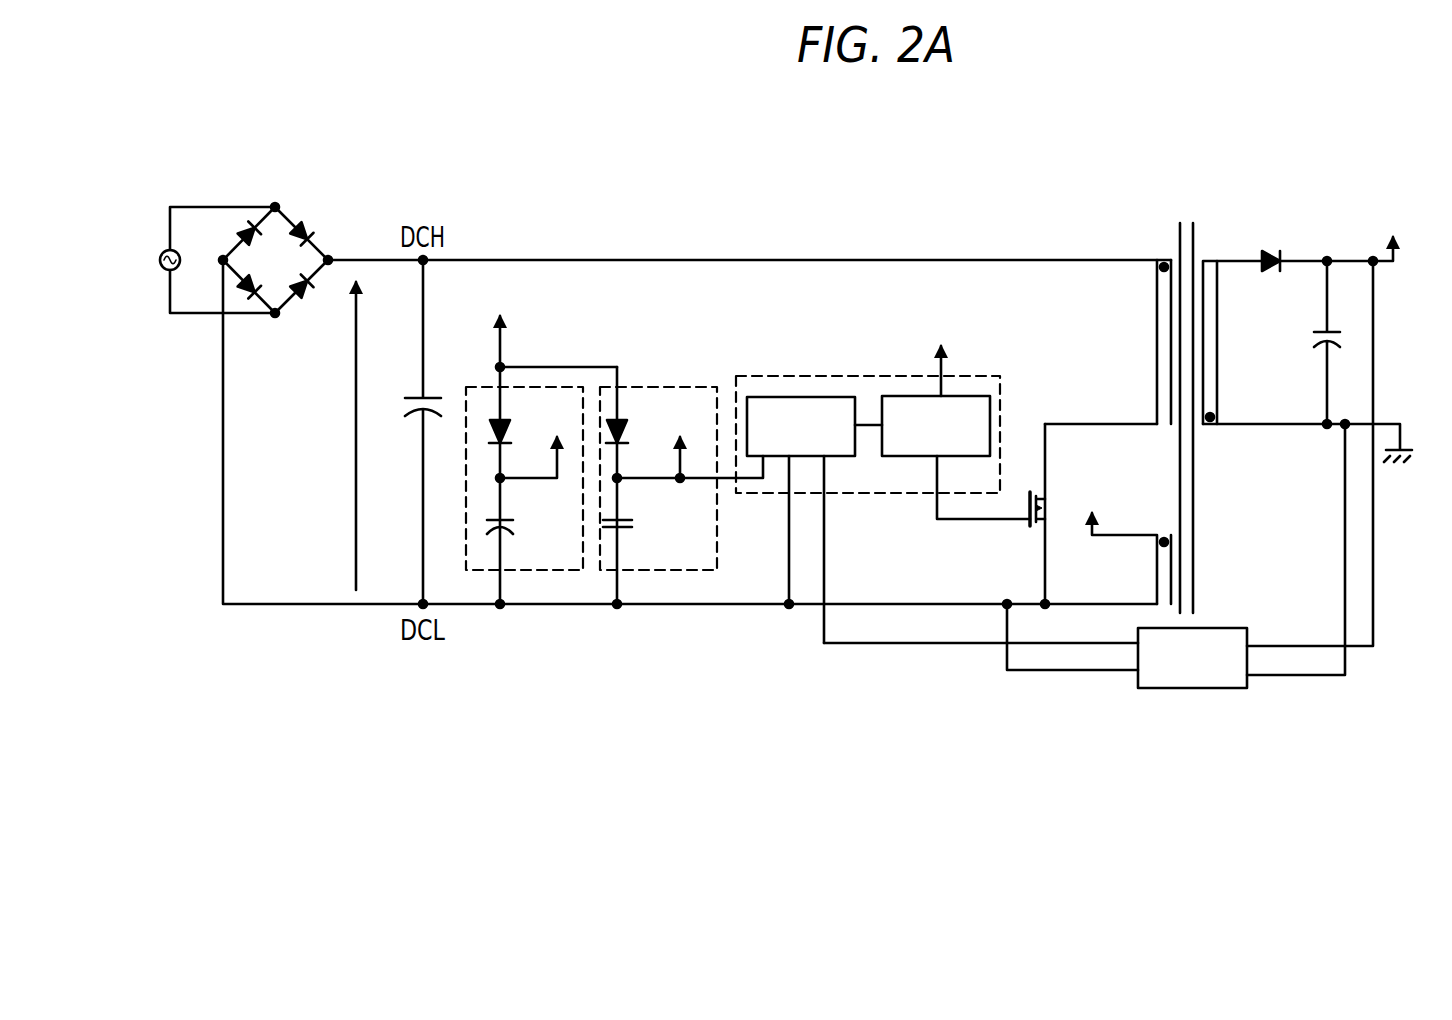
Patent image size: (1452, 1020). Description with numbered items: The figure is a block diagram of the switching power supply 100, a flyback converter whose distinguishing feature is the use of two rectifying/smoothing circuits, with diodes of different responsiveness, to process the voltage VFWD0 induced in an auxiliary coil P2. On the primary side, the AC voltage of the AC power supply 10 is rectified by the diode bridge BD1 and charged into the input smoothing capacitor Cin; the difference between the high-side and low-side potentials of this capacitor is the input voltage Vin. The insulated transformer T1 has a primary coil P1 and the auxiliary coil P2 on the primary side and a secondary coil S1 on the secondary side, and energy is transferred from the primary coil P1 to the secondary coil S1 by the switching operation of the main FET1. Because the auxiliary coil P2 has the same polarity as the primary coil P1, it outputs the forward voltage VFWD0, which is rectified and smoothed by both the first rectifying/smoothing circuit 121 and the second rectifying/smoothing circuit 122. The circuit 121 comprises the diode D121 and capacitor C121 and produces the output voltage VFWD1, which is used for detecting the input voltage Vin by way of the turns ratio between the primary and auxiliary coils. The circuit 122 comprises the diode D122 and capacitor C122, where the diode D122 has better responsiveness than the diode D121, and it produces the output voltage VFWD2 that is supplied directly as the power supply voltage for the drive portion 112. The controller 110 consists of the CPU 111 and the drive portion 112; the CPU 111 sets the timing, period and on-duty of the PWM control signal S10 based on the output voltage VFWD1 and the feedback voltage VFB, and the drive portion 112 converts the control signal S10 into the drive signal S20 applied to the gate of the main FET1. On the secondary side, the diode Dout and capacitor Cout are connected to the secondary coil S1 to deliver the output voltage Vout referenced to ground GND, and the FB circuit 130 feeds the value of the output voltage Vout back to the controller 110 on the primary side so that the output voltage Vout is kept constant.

The AC power supply 10 is at (164, 252).
The diode bridge BD1 is at (305, 200).
The input smoothing capacitor Cin is at (414, 394).
The input voltage Vin is at (356, 436).
The voltage induced in the auxiliary coil VFWD0 is at (496, 324).
The second rectifying/smoothing circuit 122 is at (545, 387).
The second diode D122 is at (496, 420).
The output voltage of the second rectifying/smoothing circuit VFWD2 is at (538, 438).
The second capacitor C122 is at (512, 528).
The first rectifying/smoothing circuit 121 is at (697, 387).
The first diode D121 is at (620, 425).
The output voltage of the first rectifying/smoothing circuit VFWD1 is at (688, 441).
The first capacitor C121 is at (634, 524).
The controller 110 is at (815, 376).
The CPU 111 is at (771, 397).
The control signal S10 is at (877, 425).
The drive portion 112 is at (977, 396).
The drive signal S20 is at (947, 521).
The main FET FET1 is at (1047, 497).
The output voltage of the FB circuit VFB is at (825, 553).
The insulated transformer T1 is at (1158, 403).
The primary coil P1 is at (1150, 342).
The auxiliary coil P2 is at (1120, 540).
The secondary coil S1 is at (1224, 345).
The diode Dout is at (1261, 252).
The capacitor Cout is at (1318, 332).
The output voltage Vout is at (1328, 424).
The ground GND is at (1326, 544).
The FB circuit 130 is at (1235, 628).
The switching power supply 100 is at (765, 630).